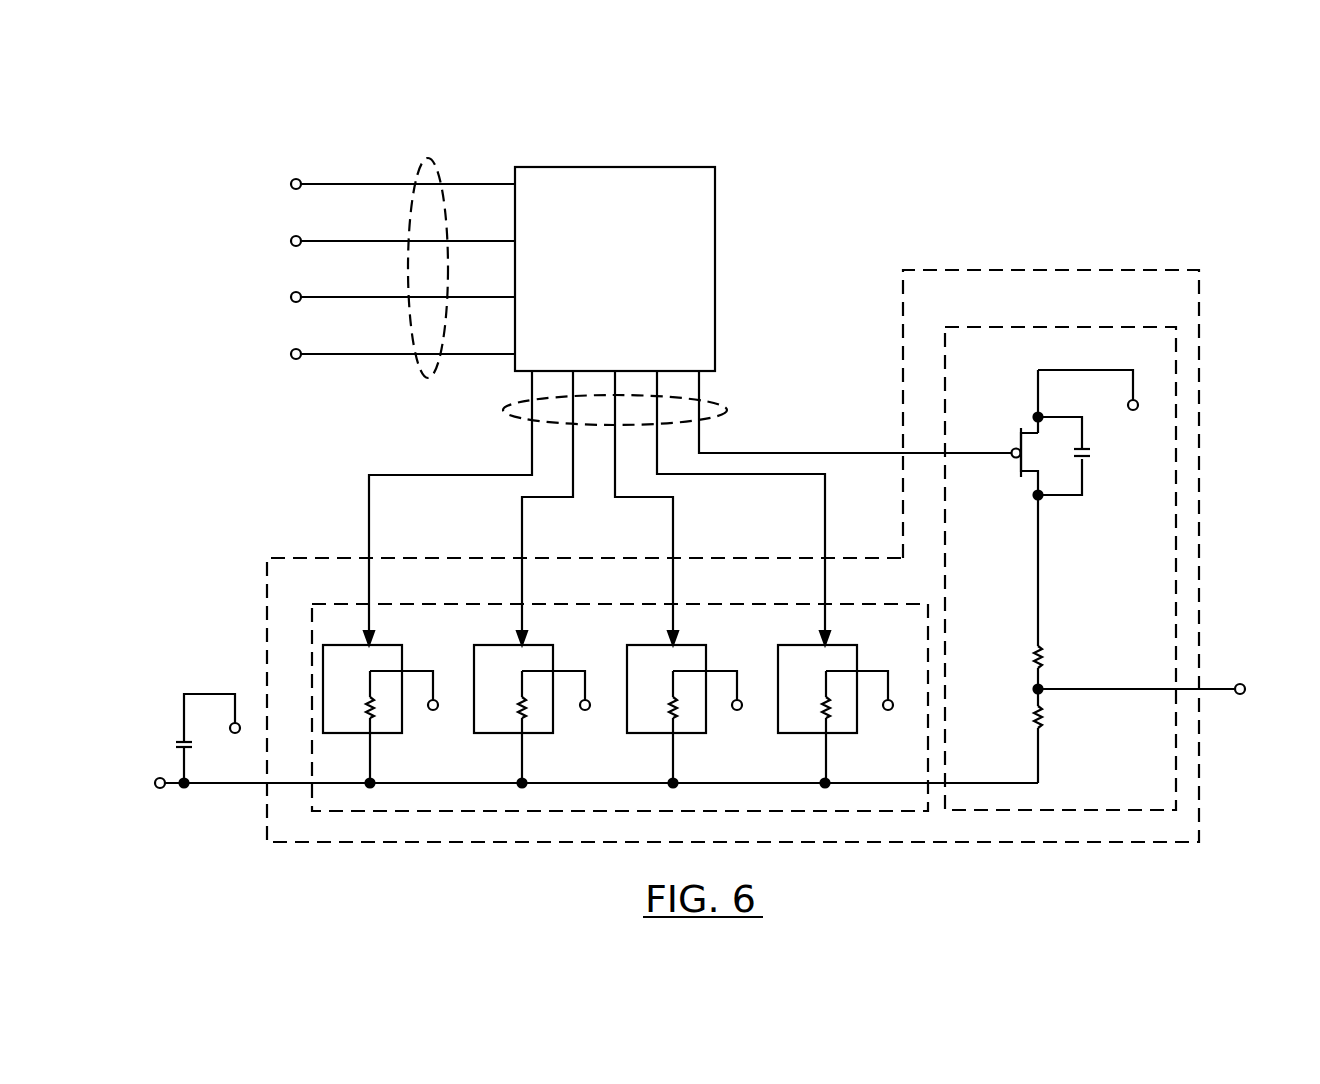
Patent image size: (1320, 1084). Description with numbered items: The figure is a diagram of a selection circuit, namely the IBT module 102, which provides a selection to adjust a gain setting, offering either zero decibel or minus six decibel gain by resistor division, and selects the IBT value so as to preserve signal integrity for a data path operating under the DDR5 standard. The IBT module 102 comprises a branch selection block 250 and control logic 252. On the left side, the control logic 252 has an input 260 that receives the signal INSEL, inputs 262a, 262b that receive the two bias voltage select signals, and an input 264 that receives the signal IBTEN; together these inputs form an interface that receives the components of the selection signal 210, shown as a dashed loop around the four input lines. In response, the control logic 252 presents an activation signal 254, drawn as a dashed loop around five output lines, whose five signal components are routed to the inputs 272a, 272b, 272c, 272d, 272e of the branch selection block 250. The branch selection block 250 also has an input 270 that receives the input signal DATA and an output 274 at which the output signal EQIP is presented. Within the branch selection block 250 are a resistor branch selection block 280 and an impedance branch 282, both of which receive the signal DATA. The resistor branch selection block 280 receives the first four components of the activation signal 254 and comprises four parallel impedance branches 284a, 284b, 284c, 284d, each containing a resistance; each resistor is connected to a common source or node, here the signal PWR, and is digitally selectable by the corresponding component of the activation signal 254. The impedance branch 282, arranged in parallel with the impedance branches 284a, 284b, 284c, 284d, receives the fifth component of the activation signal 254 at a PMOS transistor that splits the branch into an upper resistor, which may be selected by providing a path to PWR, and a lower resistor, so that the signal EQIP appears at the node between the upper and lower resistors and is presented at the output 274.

The IBT module 102 is at (300, 112).
The selection signal 210 is at (425, 162).
The branch selection block 250 is at (972, 269).
The control logic 252 is at (583, 166).
The activation signal 254 is at (728, 402).
The input 260 is at (512, 182).
The input 262a is at (512, 239).
The input 262b is at (512, 295).
The input 264 is at (512, 352).
The input 270 is at (263, 784).
The input 272a is at (368, 556).
The input 272b is at (520, 556).
The input 272c is at (672, 556).
The input 272d is at (824, 556).
The input 272e is at (900, 452).
The output 274 is at (1202, 692).
The resistor branch selection block 280 is at (354, 603).
The impedance branch 282 is at (997, 326).
The impedance branch 284a is at (394, 645).
The impedance branch 284b is at (544, 645).
The impedance branch 284c is at (695, 645).
The impedance branch 284d is at (844, 645).